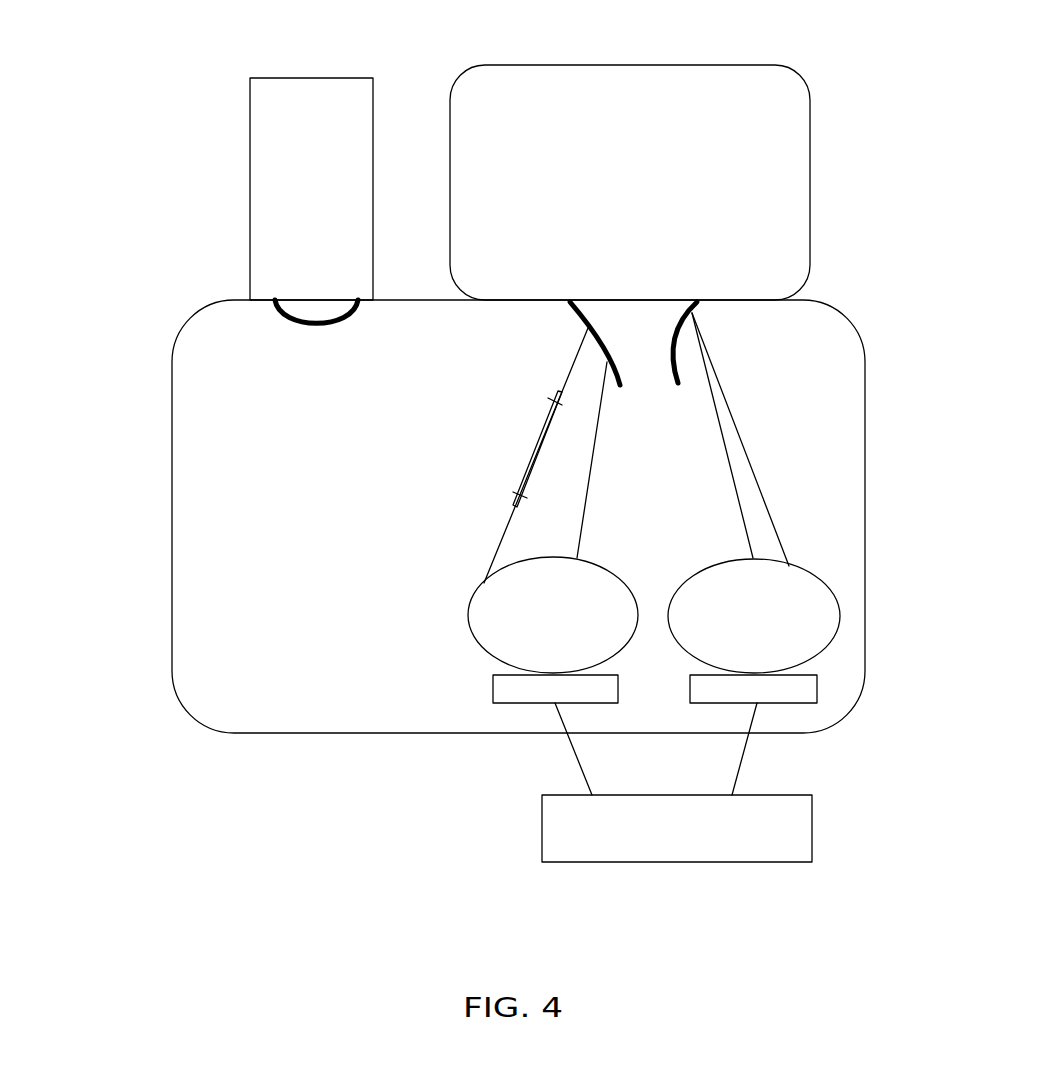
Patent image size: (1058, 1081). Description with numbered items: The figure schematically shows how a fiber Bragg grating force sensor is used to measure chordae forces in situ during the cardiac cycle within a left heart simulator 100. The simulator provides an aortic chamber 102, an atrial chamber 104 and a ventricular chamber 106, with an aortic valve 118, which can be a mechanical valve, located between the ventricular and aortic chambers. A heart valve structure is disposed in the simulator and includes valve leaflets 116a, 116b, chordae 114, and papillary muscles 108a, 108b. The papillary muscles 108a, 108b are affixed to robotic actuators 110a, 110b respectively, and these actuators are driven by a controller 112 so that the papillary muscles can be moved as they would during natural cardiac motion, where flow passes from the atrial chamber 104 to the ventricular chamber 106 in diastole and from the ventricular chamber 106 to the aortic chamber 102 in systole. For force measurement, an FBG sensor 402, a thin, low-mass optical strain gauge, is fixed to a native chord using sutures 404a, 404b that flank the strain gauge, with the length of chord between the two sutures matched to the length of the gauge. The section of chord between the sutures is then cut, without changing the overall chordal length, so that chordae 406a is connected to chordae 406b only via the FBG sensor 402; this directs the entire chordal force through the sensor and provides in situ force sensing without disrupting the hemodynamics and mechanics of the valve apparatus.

The left heart simulator 100 is at (182, 115).
The aortic chamber 102 is at (336, 199).
The atrial chamber 104 is at (660, 196).
The ventricular chamber 106 is at (323, 619).
The papillary muscle 108a is at (582, 626).
The papillary muscle 108b is at (786, 627).
The robotic actuator 110a is at (520, 687).
The robotic actuator 110b is at (798, 692).
The controller 112 is at (701, 841).
The chordae 114 is at (774, 427).
The valve leaflet 116a is at (570, 313).
The valve leaflet 116b is at (695, 303).
The aortic valve 118 is at (280, 344).
The FBG sensor 402 is at (532, 462).
The suture 404a is at (517, 512).
The suture 404b is at (560, 407).
The chordae 406a is at (503, 545).
The chordae 406b is at (545, 438).